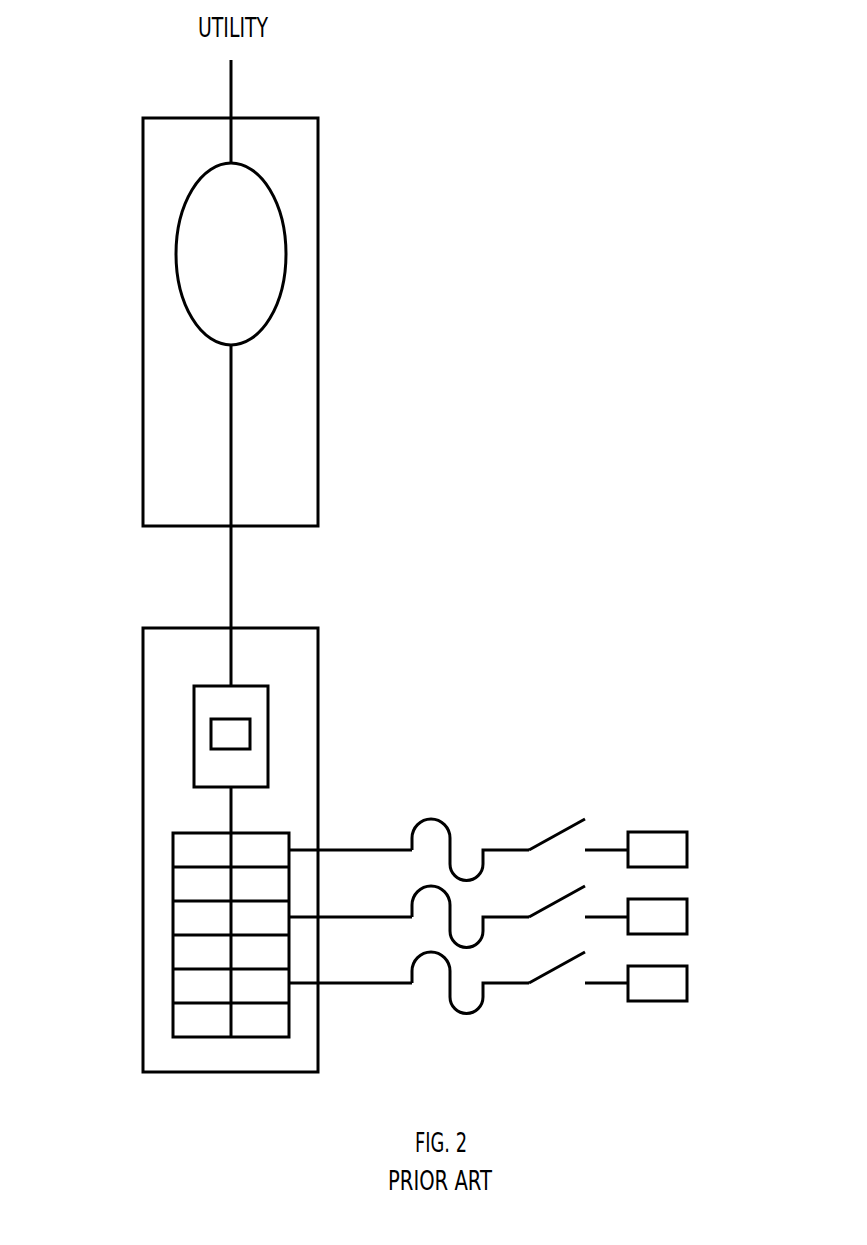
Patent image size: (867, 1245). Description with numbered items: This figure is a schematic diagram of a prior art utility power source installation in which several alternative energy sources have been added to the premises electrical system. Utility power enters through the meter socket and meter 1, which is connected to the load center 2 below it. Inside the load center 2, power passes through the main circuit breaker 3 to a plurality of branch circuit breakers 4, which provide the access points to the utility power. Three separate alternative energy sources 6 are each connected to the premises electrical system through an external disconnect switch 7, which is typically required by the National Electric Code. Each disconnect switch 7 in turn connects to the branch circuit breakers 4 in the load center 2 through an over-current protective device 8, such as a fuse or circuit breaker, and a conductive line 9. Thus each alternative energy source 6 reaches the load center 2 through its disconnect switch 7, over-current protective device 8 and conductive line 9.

The meter socket and meter 1 is at (142, 226).
The load center 2 is at (142, 645).
The main circuit breaker 3 is at (193, 704).
The branch circuit breakers 4 is at (172, 878).
The alternative energy source 6 is at (655, 832).
The external disconnect switch 7 is at (553, 827).
The over-current protective device 8 is at (442, 820).
The conductive line 9 is at (355, 850).